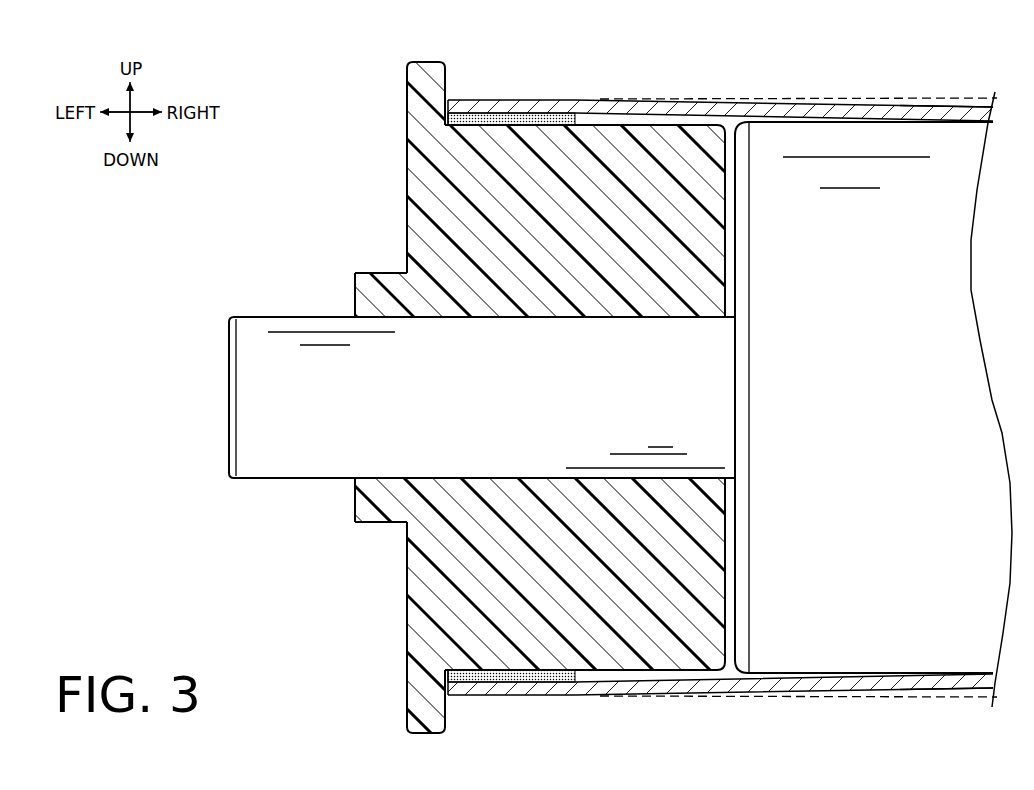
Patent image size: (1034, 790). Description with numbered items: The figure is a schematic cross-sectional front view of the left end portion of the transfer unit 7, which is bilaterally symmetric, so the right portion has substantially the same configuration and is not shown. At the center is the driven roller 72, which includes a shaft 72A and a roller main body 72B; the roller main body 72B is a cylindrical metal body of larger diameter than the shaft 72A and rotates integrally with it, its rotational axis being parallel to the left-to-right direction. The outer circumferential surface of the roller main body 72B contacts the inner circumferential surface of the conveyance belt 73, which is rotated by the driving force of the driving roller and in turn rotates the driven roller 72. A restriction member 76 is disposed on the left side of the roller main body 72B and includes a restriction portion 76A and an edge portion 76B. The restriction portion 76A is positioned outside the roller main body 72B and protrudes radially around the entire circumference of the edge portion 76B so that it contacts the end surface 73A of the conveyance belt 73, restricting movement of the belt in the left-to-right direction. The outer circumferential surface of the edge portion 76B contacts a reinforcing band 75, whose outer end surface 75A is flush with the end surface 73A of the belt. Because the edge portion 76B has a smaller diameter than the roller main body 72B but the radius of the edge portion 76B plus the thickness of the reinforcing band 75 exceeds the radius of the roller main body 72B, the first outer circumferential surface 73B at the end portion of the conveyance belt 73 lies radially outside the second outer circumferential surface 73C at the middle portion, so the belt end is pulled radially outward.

The transfer unit 7 is at (517, 395).
The driven roller 72 is at (455, 367).
The shaft 72A is at (267, 387).
The roller main body 72B is at (880, 128).
The conveyance belt 73 is at (517, 395).
The end surfaces 73A is at (446, 102).
The first outer circumferential surface 73B is at (547, 100).
The second outer circumferential surface 73C is at (937, 104).
The reinforcing bands 75 is at (461, 399).
The outer end surfaces 75A is at (446, 117).
The restriction members 76 is at (517, 395).
The restriction portion 76A is at (440, 73).
The edge portion 76B is at (600, 180).